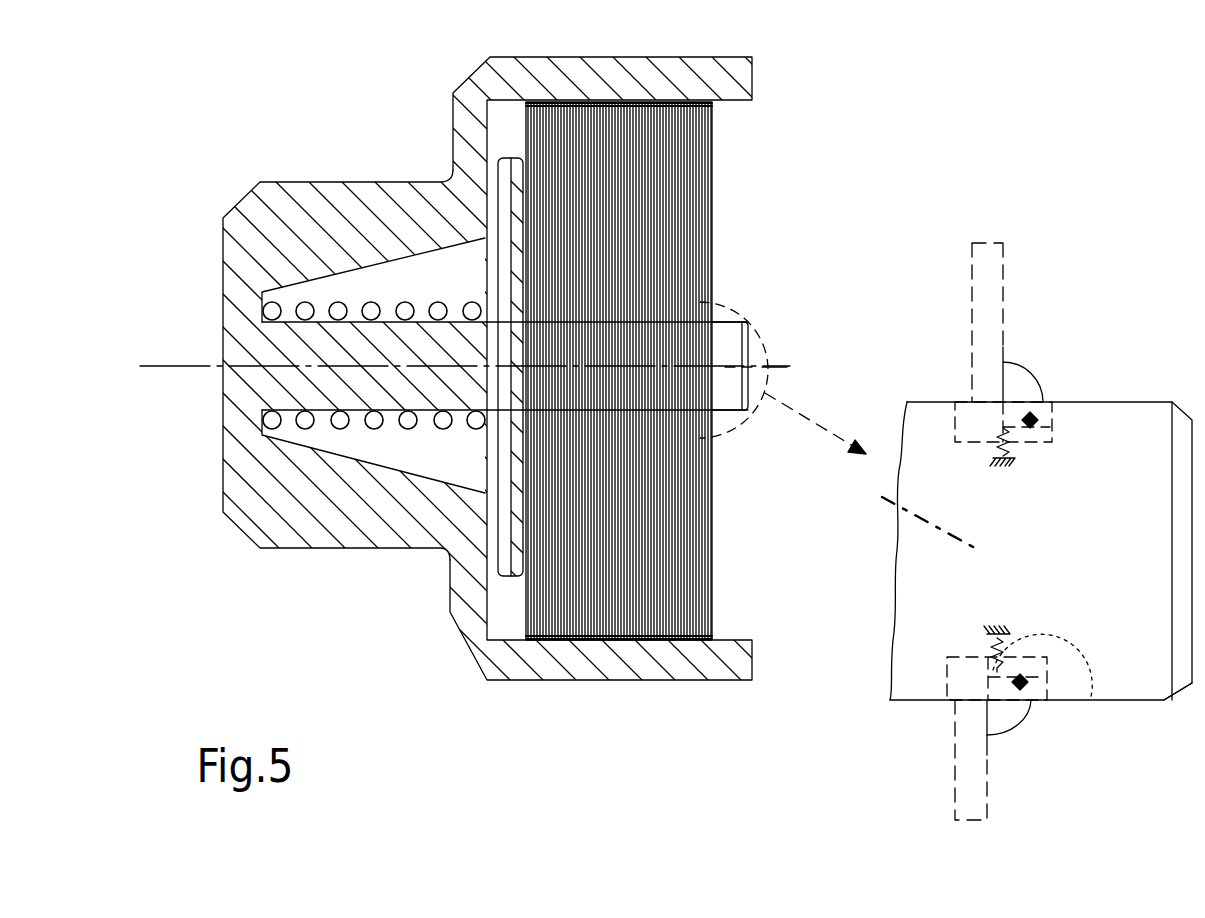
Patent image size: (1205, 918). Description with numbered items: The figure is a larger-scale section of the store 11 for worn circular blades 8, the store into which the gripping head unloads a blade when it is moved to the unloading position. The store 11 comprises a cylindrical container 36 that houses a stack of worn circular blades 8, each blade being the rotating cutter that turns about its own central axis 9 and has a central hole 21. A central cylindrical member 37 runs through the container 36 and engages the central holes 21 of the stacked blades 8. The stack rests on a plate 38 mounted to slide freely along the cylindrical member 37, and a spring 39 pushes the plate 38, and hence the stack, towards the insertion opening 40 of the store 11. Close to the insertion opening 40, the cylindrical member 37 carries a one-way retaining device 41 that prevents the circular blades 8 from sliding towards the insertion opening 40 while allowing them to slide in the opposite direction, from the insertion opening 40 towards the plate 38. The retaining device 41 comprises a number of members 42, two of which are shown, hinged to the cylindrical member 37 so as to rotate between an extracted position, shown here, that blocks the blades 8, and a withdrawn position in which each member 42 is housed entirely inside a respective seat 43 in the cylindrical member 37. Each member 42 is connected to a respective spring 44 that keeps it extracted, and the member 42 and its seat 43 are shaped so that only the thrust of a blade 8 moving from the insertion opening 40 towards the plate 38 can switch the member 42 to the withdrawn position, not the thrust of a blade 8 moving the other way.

The circular blade 8 is at (610, 100).
The central axis 9 is at (780, 365).
The store 11 is at (213, 560).
The central hole 21 is at (870, 470).
The cylindrical container 36 is at (577, 700).
The central cylindrical member 37 is at (357, 342).
The plate 38 is at (520, 170).
The spring 39 is at (343, 430).
The insertion opening 40 is at (812, 178).
The one-way retaining device 41 is at (1022, 762).
The member 42 is at (1010, 717).
The seat 43 is at (957, 665).
The spring 44 is at (1083, 700).